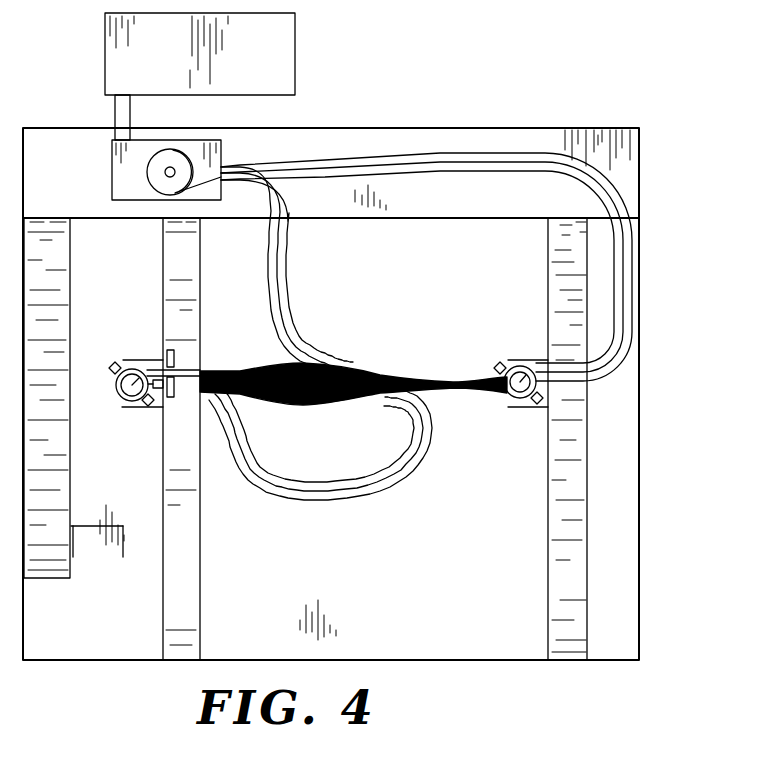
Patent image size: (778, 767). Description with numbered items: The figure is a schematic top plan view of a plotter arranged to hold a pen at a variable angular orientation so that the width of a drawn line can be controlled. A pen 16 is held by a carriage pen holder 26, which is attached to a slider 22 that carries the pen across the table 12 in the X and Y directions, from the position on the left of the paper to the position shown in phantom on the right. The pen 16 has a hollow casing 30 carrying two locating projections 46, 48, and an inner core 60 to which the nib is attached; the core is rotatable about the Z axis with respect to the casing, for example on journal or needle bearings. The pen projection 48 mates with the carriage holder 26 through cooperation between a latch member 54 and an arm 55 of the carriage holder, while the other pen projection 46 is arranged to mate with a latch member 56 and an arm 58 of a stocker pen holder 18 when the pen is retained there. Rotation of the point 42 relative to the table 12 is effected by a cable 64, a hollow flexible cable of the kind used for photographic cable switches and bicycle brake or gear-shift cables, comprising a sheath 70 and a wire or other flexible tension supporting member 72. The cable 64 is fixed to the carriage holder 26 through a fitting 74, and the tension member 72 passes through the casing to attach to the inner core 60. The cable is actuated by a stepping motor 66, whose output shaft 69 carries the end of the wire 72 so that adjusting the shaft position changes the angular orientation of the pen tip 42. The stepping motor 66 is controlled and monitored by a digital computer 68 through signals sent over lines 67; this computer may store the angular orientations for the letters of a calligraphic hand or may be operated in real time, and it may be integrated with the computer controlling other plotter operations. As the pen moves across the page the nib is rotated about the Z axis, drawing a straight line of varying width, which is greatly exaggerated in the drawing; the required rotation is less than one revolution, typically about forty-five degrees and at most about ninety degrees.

The table 12 is at (474, 609).
The pen 16 is at (112, 405).
The stocker pen holder 18 is at (120, 525).
The slider 22 is at (193, 569).
The carriage pen holder 26 is at (150, 359).
The hollow casing 30 is at (118, 393).
The pen nib point 42 is at (136, 374).
The pen projection 46 is at (112, 364).
The pen projection 48 is at (146, 406).
The latch member 54 is at (158, 389).
The arm 55 is at (125, 408).
The latch member 56 is at (96, 530).
The arm 58 is at (74, 558).
The inner core 60 is at (120, 384).
The cable 64 is at (296, 312).
The stepping motor 66 is at (126, 170).
The lines 67 is at (122, 113).
The digital computer 68 is at (122, 53).
The output shaft 69 is at (177, 151).
The sheath 70 is at (290, 245).
The tension supporting member 72 is at (268, 272).
The fitting 74 is at (176, 355).